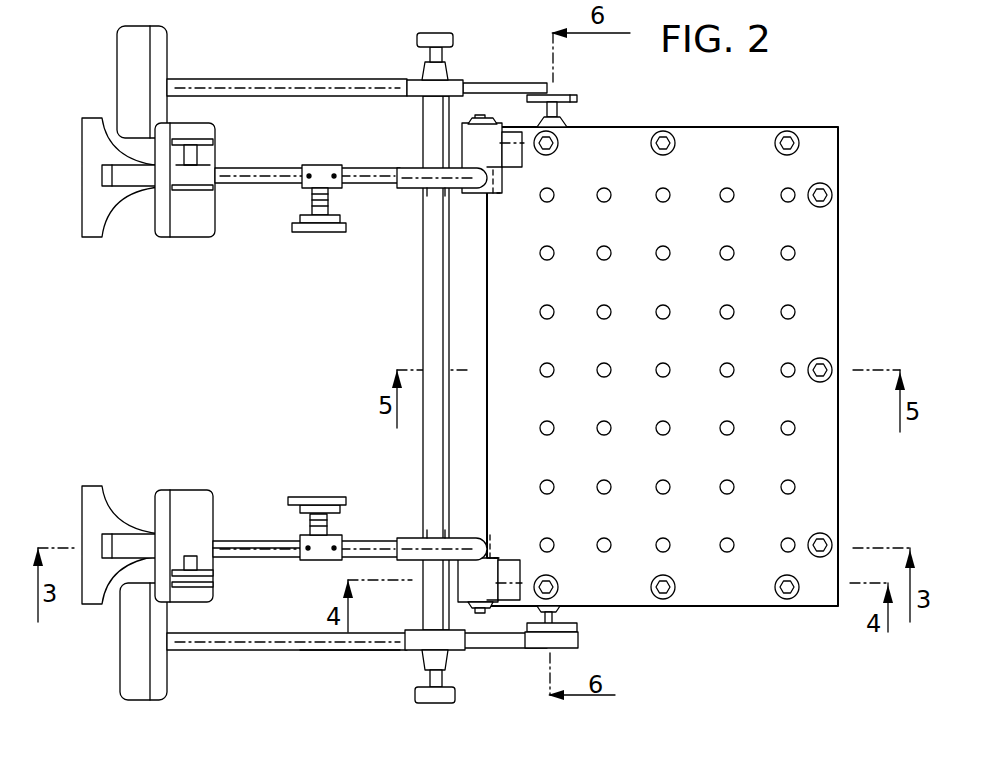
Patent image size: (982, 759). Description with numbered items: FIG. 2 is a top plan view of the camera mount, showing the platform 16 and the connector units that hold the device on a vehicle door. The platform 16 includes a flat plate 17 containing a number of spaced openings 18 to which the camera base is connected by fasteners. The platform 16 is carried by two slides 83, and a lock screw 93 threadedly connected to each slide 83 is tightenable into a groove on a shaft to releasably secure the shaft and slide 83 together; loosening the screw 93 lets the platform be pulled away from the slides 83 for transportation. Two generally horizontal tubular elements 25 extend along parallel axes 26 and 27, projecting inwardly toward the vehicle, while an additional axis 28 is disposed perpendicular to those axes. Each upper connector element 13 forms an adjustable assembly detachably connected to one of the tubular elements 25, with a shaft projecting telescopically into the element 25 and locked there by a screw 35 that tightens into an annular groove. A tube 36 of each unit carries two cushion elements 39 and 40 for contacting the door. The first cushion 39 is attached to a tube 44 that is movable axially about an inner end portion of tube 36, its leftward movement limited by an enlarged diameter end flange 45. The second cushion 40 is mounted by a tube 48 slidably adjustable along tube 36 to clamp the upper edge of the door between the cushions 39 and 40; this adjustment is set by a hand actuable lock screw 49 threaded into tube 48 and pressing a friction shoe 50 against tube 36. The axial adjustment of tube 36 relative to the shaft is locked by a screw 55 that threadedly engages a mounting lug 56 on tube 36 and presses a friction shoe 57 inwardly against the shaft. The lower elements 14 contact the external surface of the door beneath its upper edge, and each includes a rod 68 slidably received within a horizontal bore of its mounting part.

The upper connector elements 13 is at (289, 160).
The lower elements 14 is at (253, 652).
The platform 16 is at (805, 152).
The flat plate 17 is at (818, 220).
The spaced openings 18 is at (793, 309).
The tubular elements 25 is at (427, 165).
The axis 26 is at (506, 548).
The axis 27 is at (525, 180).
The axis 28 is at (472, 548).
The screw 35 is at (462, 153).
The tube 36 is at (252, 557).
The cushion element 39 is at (113, 218).
The cushion element 40 is at (212, 234).
The tube 44 is at (138, 538).
The end flange 45 is at (112, 152).
The tube 48 is at (202, 180).
The lock screw 49 is at (195, 137).
The friction shoe 50 is at (196, 164).
The screw 55 is at (321, 233).
The mounting lug 56 is at (329, 202).
The friction shoe 57 is at (322, 172).
The rod 68 is at (387, 650).
The slides 83 is at (464, 158).
The lock screw 93 is at (480, 114).